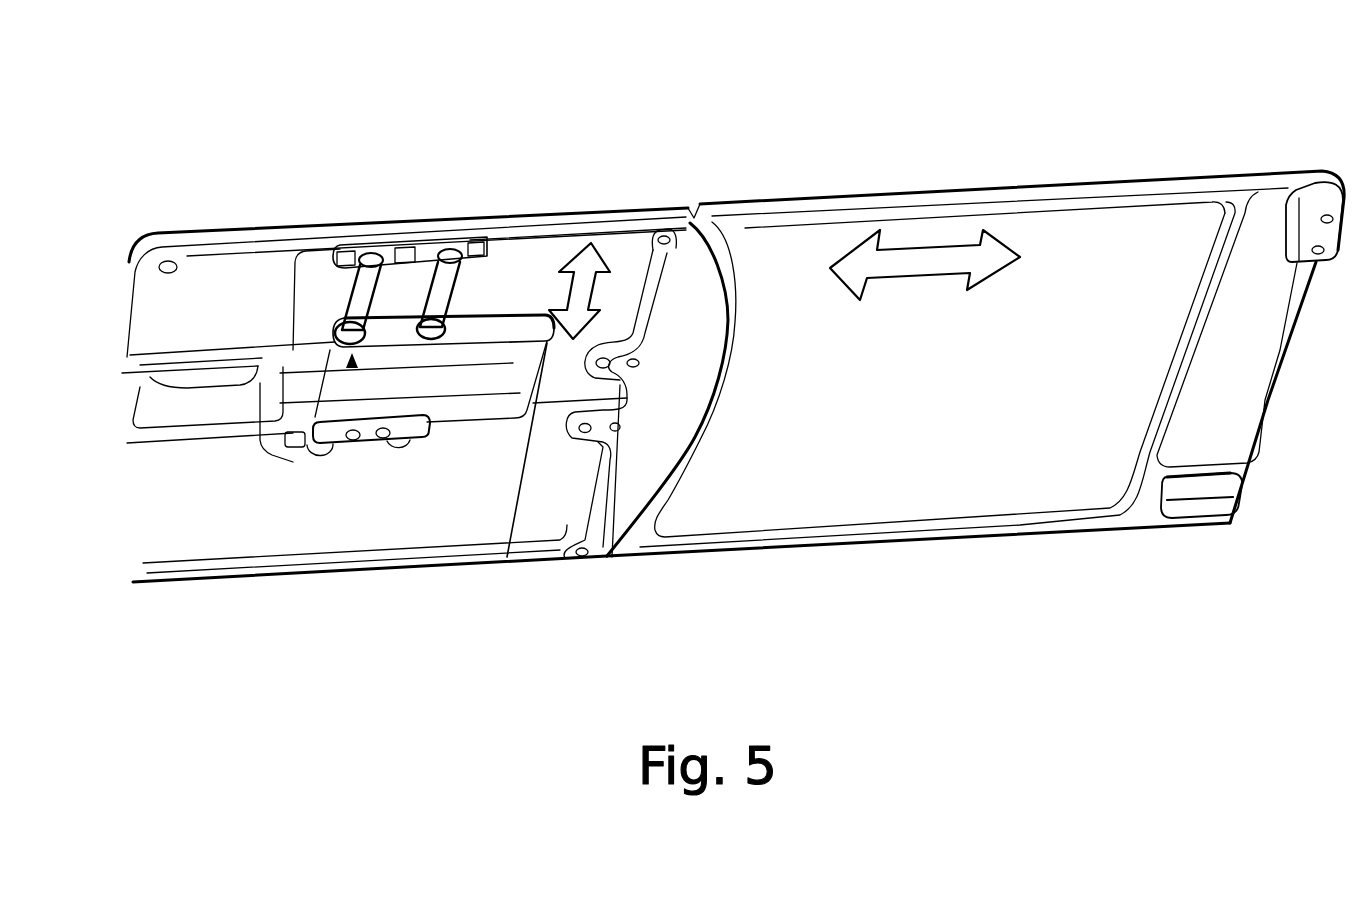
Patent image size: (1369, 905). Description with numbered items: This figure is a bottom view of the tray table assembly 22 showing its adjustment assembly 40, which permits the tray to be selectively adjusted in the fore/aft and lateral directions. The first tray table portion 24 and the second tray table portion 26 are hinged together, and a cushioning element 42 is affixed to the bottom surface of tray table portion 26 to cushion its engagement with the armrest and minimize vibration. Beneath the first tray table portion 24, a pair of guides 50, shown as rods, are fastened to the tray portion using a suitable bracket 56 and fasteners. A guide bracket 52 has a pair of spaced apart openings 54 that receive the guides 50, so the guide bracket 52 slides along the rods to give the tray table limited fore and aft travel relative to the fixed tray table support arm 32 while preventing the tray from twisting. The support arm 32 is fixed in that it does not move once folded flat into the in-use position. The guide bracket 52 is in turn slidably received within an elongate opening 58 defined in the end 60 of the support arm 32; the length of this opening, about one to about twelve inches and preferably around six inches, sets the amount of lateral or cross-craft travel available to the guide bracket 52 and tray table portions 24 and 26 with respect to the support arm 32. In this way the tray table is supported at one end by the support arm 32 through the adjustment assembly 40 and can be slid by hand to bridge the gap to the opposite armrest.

The tray table assembly 22 is at (836, 146).
The first tray table portion 24 is at (550, 210).
The second tray table portion 26 is at (1043, 183).
The tray table support arm 32 is at (186, 410).
The adjustment assembly 40 is at (125, 373).
The cushioning element 42 is at (1327, 168).
The guide 50 is at (467, 240).
The guide bracket 52 is at (387, 333).
The openings 54 is at (356, 432).
The bracket 56 is at (343, 238).
The elongate opening 58 is at (507, 557).
The end of the support arm 60 is at (600, 557).